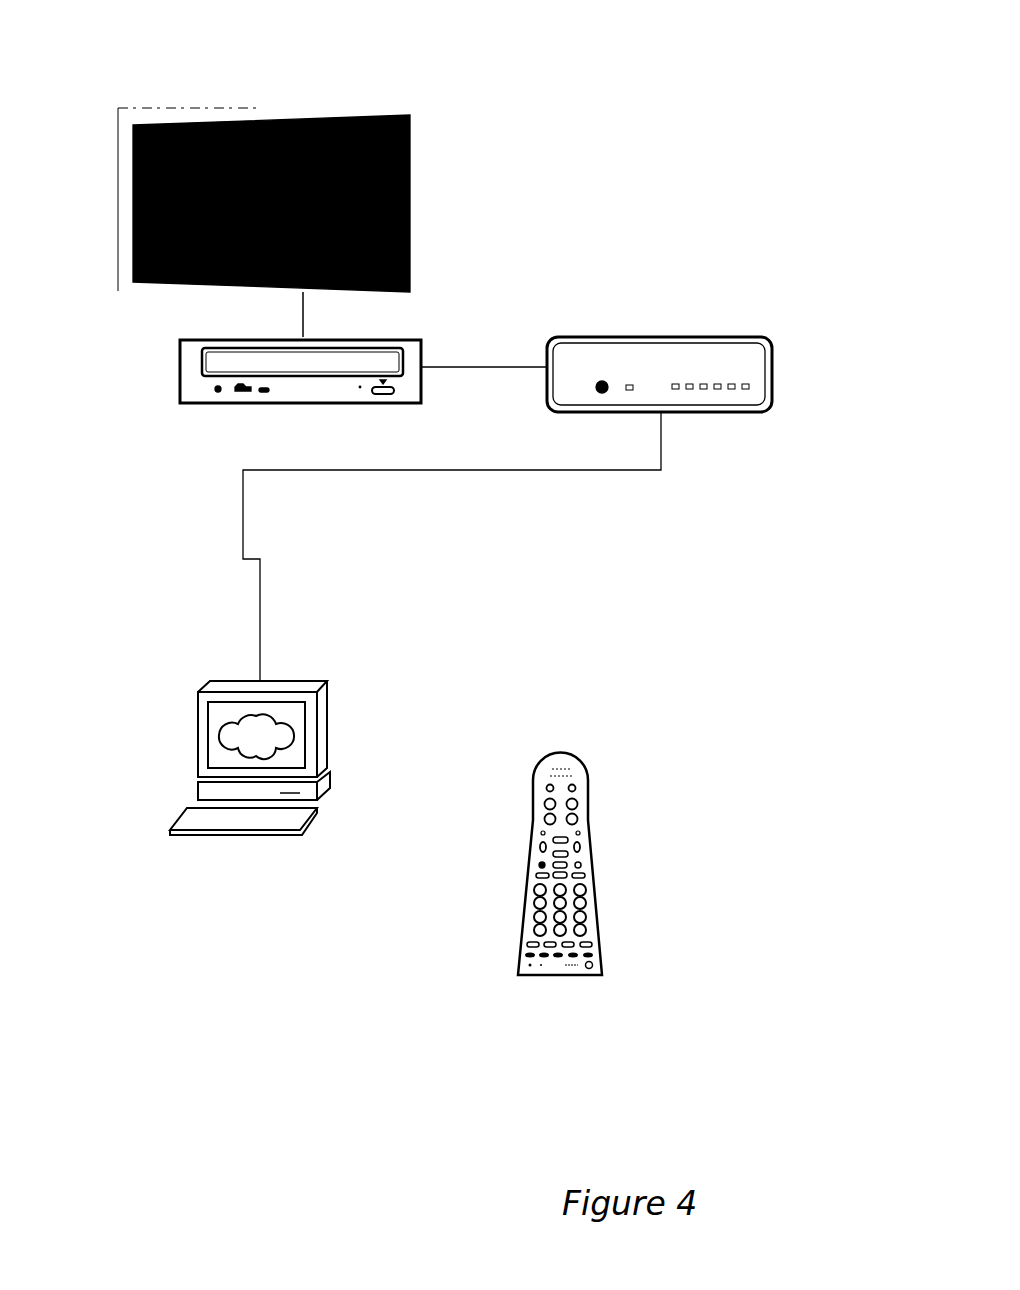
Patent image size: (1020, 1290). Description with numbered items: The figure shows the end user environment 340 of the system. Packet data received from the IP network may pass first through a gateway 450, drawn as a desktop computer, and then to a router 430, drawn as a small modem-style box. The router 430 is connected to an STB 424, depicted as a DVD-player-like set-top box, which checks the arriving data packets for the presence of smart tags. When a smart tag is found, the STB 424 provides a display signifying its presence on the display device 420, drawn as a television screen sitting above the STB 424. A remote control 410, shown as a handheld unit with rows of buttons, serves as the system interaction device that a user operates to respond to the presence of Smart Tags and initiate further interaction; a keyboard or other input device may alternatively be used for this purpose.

The end user environment 340 is at (754, 68).
The remote control 410 is at (574, 744).
The display device 420 is at (309, 90).
The STB 424 is at (216, 412).
The router 430 is at (657, 323).
The gateway 450 is at (193, 729).